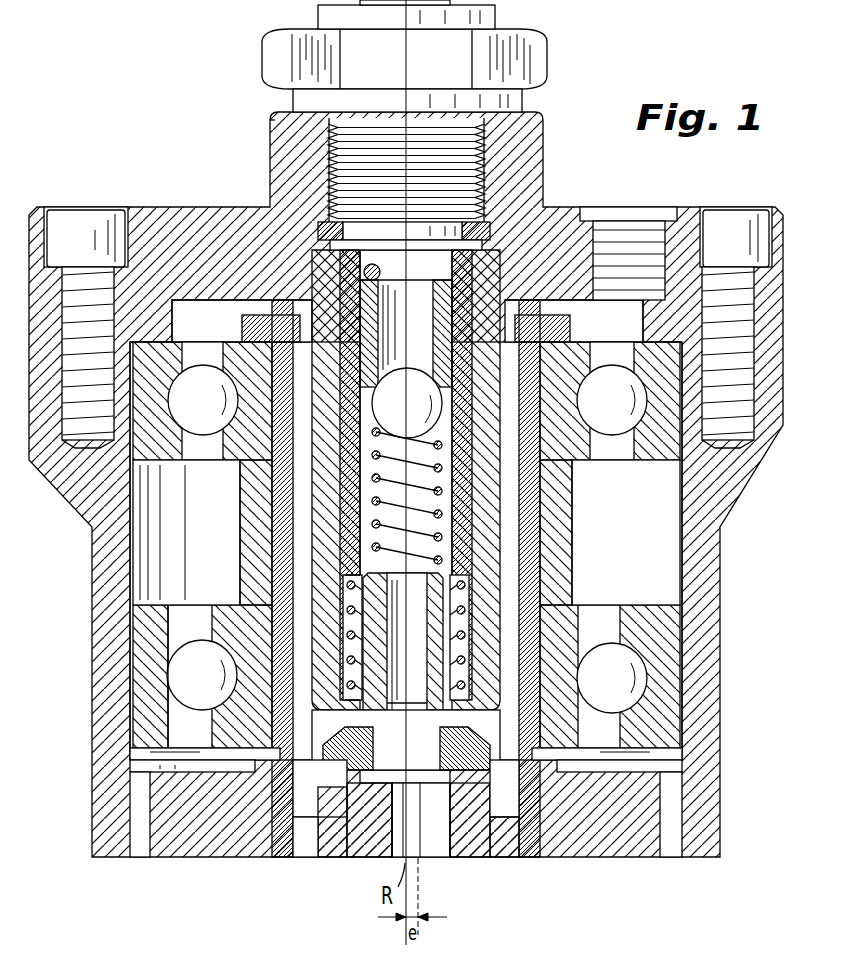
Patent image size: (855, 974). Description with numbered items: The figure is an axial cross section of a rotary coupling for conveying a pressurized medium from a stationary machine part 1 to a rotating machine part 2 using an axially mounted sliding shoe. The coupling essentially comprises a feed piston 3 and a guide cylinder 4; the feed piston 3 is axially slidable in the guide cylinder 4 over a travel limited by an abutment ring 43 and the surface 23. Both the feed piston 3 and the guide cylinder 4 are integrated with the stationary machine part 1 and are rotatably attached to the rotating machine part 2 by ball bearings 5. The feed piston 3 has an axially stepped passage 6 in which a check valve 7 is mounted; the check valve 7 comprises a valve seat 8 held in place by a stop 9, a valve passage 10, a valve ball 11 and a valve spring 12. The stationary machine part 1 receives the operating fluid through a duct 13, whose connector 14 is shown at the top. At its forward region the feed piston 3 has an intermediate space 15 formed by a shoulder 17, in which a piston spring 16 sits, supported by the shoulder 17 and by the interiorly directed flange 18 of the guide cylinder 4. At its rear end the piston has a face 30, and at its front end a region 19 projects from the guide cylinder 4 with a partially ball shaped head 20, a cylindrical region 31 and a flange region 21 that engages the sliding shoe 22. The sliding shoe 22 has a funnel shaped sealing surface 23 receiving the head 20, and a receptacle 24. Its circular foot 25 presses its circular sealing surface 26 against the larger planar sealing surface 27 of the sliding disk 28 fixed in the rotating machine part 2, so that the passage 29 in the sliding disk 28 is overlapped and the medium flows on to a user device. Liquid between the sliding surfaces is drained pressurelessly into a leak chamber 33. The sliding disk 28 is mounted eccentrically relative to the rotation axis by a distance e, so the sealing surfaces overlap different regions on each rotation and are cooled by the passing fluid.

The stationary machine part 1 is at (548, 122).
The rotating machine part 2 is at (528, 847).
The feed piston 3 is at (385, 548).
The guide cylinder 4 is at (482, 513).
The ball bearings 5 is at (657, 612).
The axially stepped passage 6 is at (358, 577).
The check valve 7 is at (560, 456).
The valve seat 8 is at (440, 300).
The stop 9 is at (380, 270).
The valve passage 10 is at (407, 403).
The valve ball 11 is at (420, 392).
The valve spring 12 is at (348, 493).
The duct 13 is at (490, 152).
The connector 14 is at (533, 52).
The intermediate space 15 is at (350, 598).
The piston spring 16 is at (345, 620).
The shoulder 17 is at (462, 582).
The interiorly directed flange 18 is at (445, 738).
The front region 19 is at (330, 714).
The head 20 is at (378, 757).
The flange region 21 is at (368, 820).
The sliding shoe 22 is at (327, 845).
The funnel shaped sealing surface 23 is at (403, 671).
The receptacle 24 is at (428, 790).
The circular foot 25 is at (338, 830).
The circular sealing surface 26 is at (455, 845).
The sealing surface 27 is at (527, 843).
The sliding disk 28 is at (472, 833).
The passage 29 is at (440, 840).
The face 30 is at (465, 240).
The cylindrical region 31 is at (296, 785).
The leak chamber 33 is at (515, 550).
The abutment ring 43 is at (332, 240).